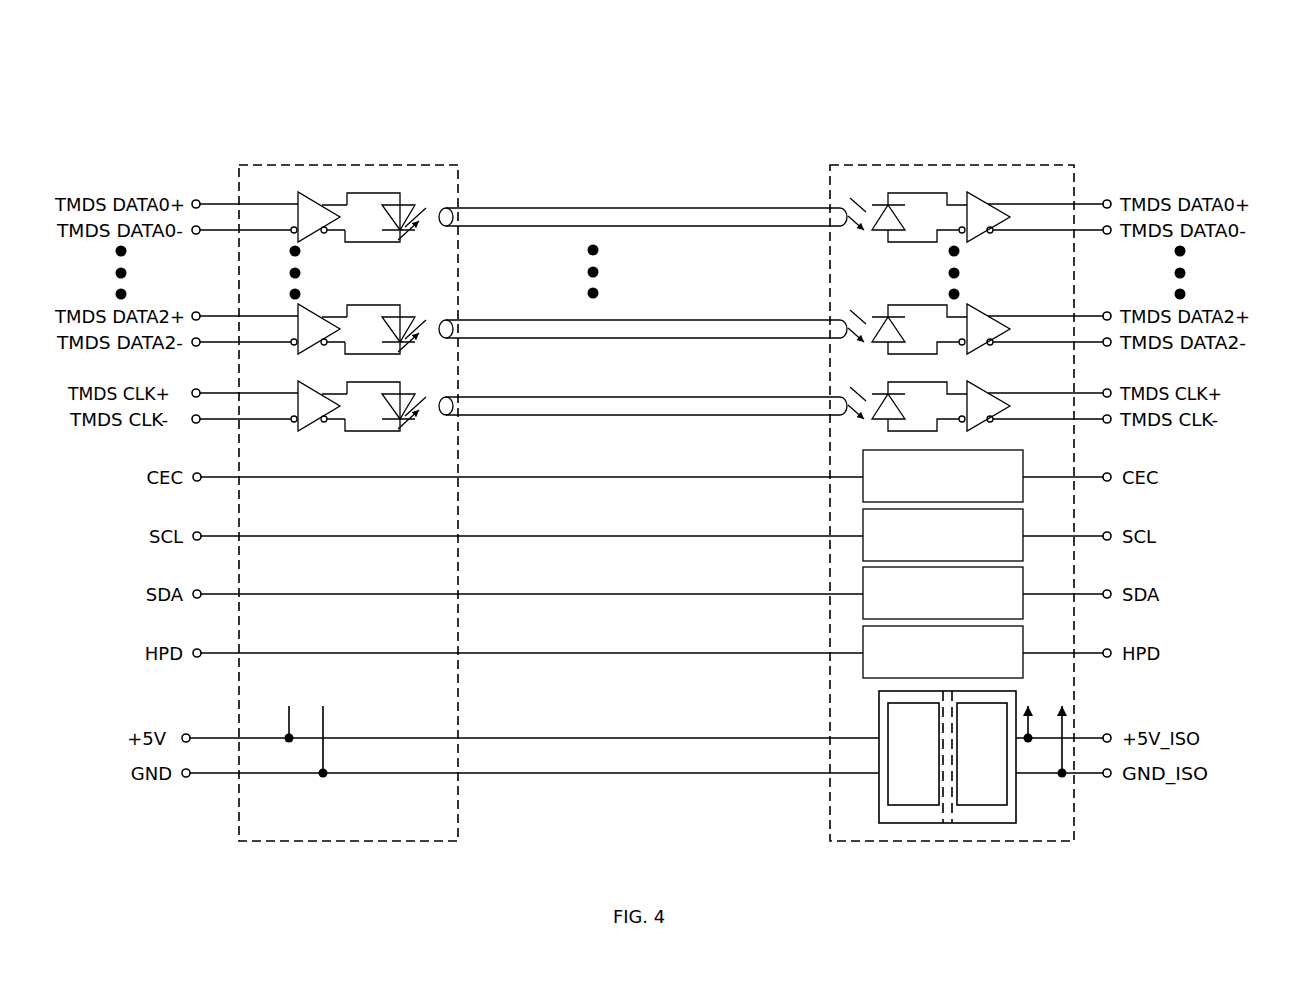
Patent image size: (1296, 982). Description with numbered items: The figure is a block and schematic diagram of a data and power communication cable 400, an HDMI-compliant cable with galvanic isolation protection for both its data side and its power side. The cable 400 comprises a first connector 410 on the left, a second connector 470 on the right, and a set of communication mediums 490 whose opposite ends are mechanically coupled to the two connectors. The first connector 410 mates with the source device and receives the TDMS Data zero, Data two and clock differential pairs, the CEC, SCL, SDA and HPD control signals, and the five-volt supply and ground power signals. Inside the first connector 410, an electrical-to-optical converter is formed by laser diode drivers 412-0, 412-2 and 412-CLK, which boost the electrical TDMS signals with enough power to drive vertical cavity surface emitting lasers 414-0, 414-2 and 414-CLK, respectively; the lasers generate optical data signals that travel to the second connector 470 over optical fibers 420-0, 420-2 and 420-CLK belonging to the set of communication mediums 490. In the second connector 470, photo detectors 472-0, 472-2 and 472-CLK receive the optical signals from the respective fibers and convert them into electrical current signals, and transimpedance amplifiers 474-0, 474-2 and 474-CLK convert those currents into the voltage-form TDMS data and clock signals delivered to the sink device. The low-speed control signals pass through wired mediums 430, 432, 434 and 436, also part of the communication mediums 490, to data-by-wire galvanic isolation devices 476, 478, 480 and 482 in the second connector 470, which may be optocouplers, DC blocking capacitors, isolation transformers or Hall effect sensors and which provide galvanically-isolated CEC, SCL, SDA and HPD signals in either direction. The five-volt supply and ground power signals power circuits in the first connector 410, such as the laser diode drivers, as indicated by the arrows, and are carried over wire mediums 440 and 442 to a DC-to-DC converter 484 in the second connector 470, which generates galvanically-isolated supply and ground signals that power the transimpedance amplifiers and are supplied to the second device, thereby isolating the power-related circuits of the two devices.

The data and power communication cable 400 is at (767, 55).
The first connector 410 is at (458, 155).
The set of communication mediums 490 is at (830, 841).
The second connector 470 is at (1074, 155).
The laser diode driver 412-0 is at (308, 194).
The laser diode driver 412-2 is at (308, 306).
The laser diode driver 412-CLK is at (308, 383).
The vertical cavity surface emitting laser 414-0 is at (418, 193).
The vertical cavity surface emitting laser 414-2 is at (418, 305).
The vertical cavity surface emitting laser 414-CLK is at (418, 382).
The optical fiber 420-0 is at (627, 207).
The optical fiber 420-2 is at (627, 319).
The optical fiber 420-CLK is at (627, 396).
The photo detector 472-0 is at (870, 204).
The photo detector 472-2 is at (870, 316).
The photo detector 472-CLK is at (870, 393).
The transimpedance amplifier 474-0 is at (975, 192).
The transimpedance amplifier 474-2 is at (975, 304).
The transimpedance amplifier 474-CLK is at (975, 381).
The wired medium 430 is at (662, 476).
The wired medium 432 is at (662, 535).
The wired medium 434 is at (662, 593).
The wired medium 436 is at (662, 652).
The wire medium 440 is at (662, 737).
The wire medium 442 is at (662, 774).
The data-by-wire galvanic isolation device 476 is at (1025, 469).
The data-by-wire galvanic isolation device 478 is at (1025, 528).
The data-by-wire galvanic isolation device 480 is at (1025, 586).
The data-by-wire galvanic isolation device 482 is at (1025, 645).
The DC-to-DC converter 484 is at (878, 727).